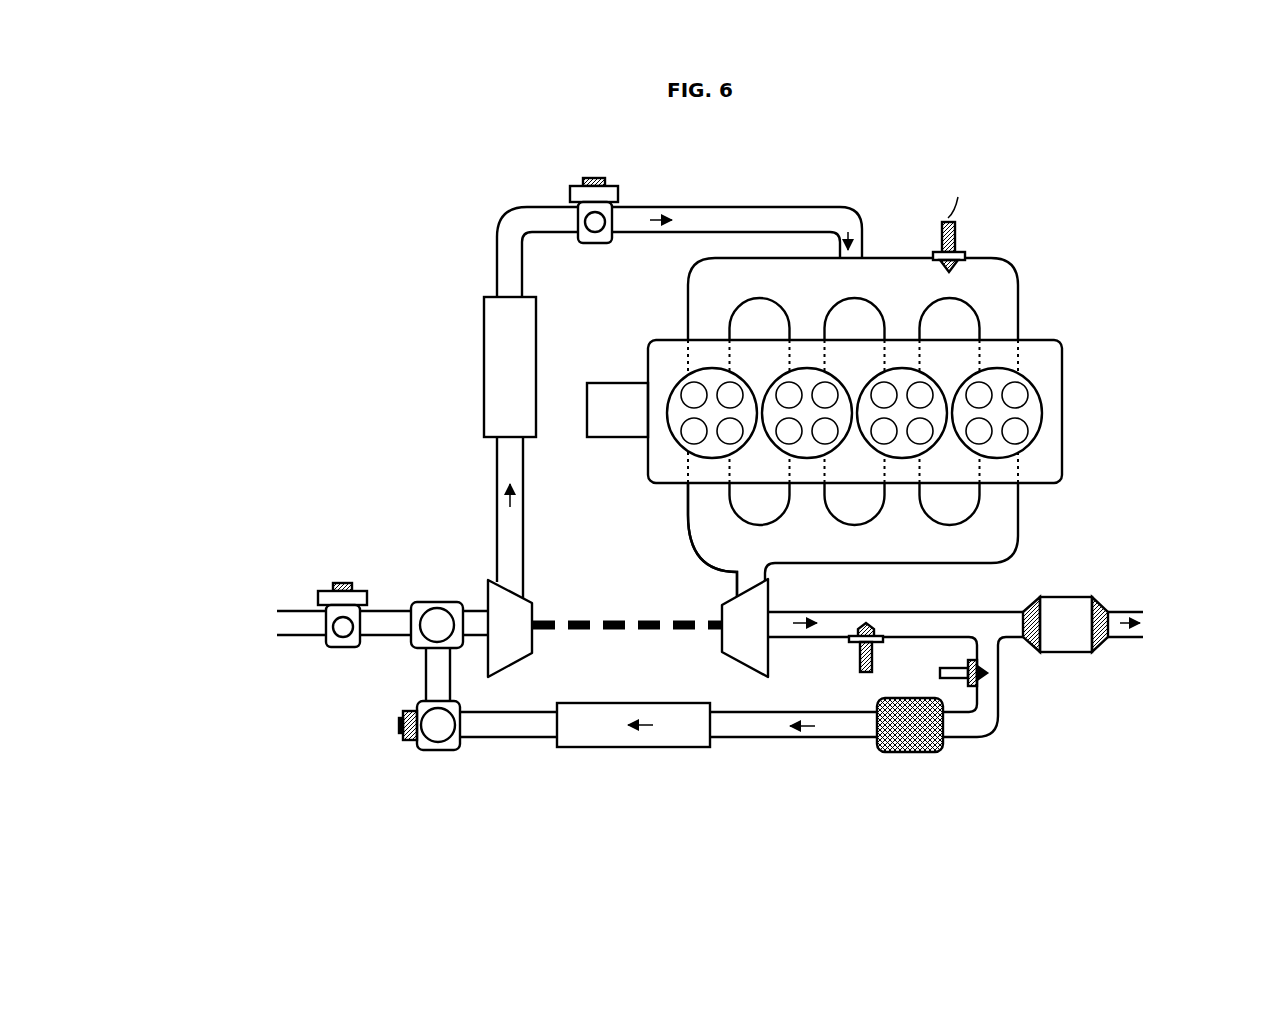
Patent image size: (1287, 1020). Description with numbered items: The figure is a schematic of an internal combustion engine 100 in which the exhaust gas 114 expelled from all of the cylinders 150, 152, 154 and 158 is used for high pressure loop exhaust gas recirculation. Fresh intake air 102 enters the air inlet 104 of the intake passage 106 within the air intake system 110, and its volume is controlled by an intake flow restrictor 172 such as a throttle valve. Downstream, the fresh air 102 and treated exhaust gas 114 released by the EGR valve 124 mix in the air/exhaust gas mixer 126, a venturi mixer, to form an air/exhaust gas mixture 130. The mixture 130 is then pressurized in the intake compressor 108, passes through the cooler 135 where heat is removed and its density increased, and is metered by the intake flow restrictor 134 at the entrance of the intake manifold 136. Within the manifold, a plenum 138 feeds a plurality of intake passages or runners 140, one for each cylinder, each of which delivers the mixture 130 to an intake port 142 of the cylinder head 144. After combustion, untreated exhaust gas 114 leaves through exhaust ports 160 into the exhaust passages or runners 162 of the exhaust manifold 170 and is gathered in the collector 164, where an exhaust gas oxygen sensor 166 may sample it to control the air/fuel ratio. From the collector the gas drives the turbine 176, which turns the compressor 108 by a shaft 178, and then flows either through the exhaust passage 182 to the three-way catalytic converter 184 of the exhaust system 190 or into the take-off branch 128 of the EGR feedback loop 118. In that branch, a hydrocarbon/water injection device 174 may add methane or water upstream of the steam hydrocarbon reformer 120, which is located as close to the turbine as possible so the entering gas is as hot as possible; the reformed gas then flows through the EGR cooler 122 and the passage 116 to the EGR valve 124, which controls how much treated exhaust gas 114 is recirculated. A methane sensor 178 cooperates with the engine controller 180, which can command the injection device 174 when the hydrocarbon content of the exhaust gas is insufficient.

The internal combustion engine 100 is at (297, 183).
The fresh intake air 102 is at (290, 622).
The air inlet 104 is at (287, 630).
The intake passage 106 is at (512, 237).
The intake compressor 108 is at (578, 614).
The air intake system 110 is at (345, 298).
The exhaust gas 114 is at (853, 540).
The passage 116 is at (758, 725).
The EGR feedback loop 118 is at (323, 723).
The steam hydrocarbon reformer 120 is at (910, 766).
The EGR cooler 122 is at (585, 740).
The EGR valve 124 is at (437, 726).
The air/exhaust gas mixer 126 is at (437, 612).
The take-off branch 128 is at (1002, 725).
The air/exhaust gas mixture 130 is at (477, 517).
The intake flow restrictor 134 is at (598, 228).
The cooler 135 is at (486, 367).
The intake manifold 136 is at (1032, 258).
The plenum 138 is at (900, 280).
The intake passage/runner 140 is at (707, 323).
The intake port 142 is at (898, 348).
The cylinder head 144 is at (663, 473).
The cylinder 150 is at (716, 411).
The cylinder 152 is at (811, 411).
The cylinder 154 is at (906, 411).
The cylinder 158 is at (1001, 411).
The exhaust port 160 is at (898, 477).
The exhaust passage/runner 162 is at (703, 507).
The collector 164 is at (702, 548).
The exhaust gas oxygen sensor 166 is at (866, 677).
The exhaust manifold 170 is at (909, 575).
The intake flow restrictor 172 is at (345, 605).
The hydrocarbon/water injection device 174 is at (1004, 697).
The turbine 176 is at (702, 633).
The shaft 178 is at (943, 672).
The engine controller 180 is at (617, 410).
The exhaust passage 182 is at (1155, 624).
The catalytic converter 184 is at (1065, 597).
The exhaust system 190 is at (1095, 510).